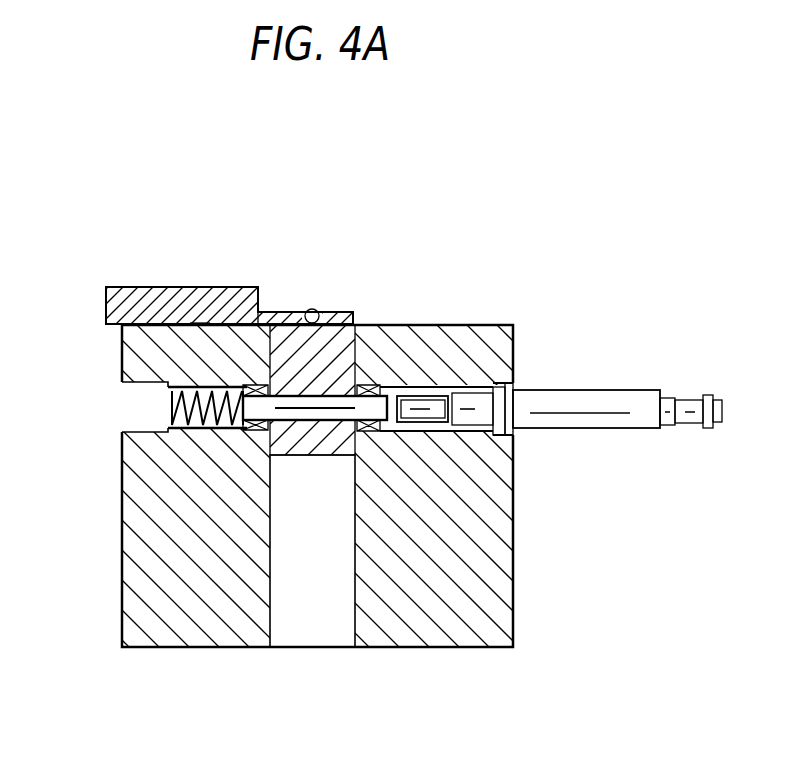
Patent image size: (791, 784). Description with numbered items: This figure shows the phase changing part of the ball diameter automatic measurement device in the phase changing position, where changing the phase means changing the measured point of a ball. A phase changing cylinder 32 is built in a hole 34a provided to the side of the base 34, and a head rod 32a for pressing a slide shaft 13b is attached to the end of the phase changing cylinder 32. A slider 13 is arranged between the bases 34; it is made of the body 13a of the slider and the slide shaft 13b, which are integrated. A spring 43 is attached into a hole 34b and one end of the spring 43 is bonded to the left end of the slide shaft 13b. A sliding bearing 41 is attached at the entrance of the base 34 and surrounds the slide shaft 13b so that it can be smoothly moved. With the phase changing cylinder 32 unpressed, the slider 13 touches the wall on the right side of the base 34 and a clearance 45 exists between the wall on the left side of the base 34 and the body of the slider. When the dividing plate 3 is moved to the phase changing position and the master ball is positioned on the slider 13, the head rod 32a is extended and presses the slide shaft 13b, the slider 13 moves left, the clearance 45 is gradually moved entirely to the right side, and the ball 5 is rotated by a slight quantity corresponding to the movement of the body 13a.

The dividing plate 3 is at (142, 288).
The ball 5 is at (311, 308).
The slider 13 is at (297, 343).
The body of the slider 13a is at (337, 337).
The slide shaft 13b is at (293, 420).
The phase changing cylinder 32 is at (557, 395).
The head rod 32a is at (427, 398).
The base 34 is at (137, 527).
The hole 34a is at (450, 433).
The hole 34b is at (177, 383).
The sliding bearing 41 is at (200, 323).
The spring 43 is at (180, 427).
The clearance 45 is at (272, 317).